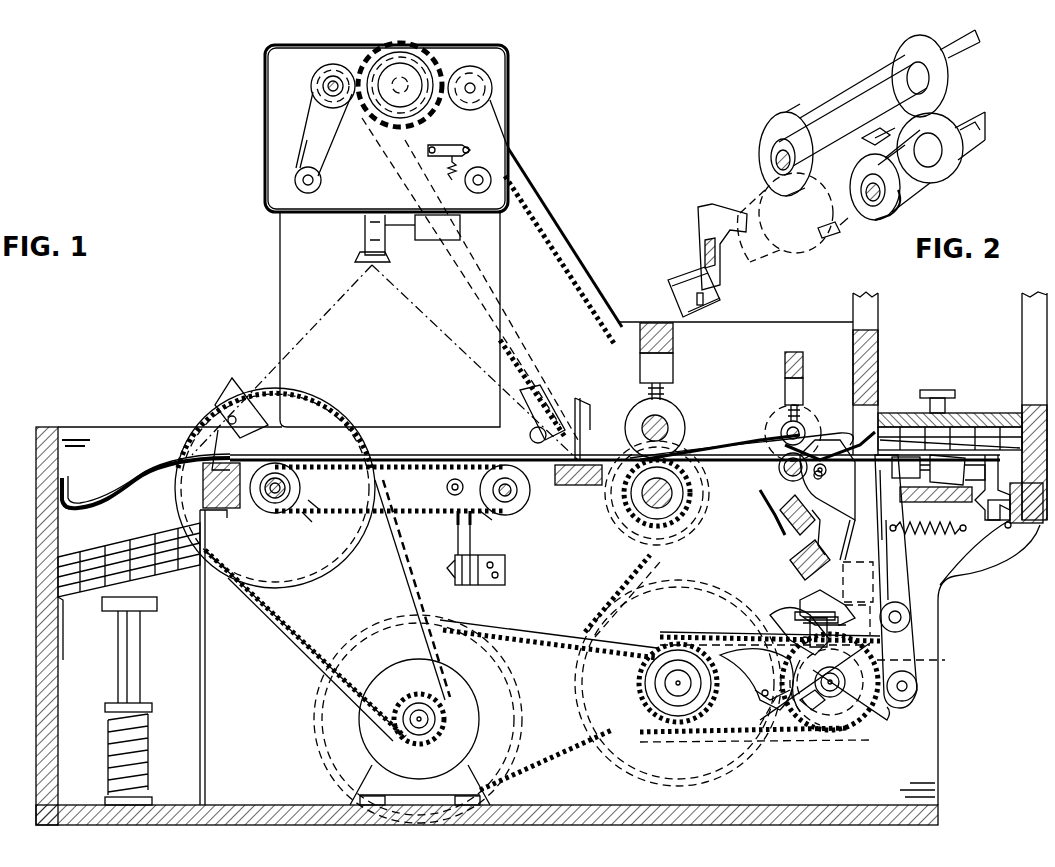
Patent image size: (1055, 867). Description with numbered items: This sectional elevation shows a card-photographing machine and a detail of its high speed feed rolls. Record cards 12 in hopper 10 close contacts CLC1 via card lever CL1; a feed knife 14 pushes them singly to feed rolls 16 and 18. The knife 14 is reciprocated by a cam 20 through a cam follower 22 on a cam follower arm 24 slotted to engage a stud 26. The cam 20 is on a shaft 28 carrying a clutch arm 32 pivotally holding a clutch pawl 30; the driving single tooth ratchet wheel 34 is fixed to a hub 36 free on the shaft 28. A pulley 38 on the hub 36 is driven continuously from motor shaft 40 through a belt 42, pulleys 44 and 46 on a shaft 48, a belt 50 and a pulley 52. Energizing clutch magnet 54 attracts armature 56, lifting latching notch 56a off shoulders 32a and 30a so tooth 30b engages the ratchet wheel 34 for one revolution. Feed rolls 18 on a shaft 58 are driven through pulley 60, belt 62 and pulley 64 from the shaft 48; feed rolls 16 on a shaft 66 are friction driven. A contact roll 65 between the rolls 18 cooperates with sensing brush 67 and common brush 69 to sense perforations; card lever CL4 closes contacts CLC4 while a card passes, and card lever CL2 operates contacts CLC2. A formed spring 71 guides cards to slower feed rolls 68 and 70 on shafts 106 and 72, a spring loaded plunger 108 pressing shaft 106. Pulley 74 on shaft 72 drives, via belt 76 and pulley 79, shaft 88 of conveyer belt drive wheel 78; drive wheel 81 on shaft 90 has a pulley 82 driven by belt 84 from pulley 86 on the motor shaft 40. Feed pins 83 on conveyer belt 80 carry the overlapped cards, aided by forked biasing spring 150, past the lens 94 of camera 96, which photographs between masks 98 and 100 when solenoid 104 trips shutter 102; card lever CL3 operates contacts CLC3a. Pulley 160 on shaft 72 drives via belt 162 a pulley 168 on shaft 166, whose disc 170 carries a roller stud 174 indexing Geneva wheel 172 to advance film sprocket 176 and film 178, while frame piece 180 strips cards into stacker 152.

In FIG. 1, the card feed hopper 10 is at (955, 372).
In FIG. 1, the record cards 12 is at (955, 415).
In FIG. 1, the feed knife 14 is at (945, 490).
In FIG. 1, the feed rolls 16 is at (782, 433).
In FIG. 2, the feed rolls 16 is at (785, 118).
In FIG. 2, the feed rolls 18 is at (952, 160).
In FIG. 1, the cam 20 is at (880, 712).
In FIG. 1, the cam follower 22 is at (918, 690).
In FIG. 1, the cam follower arm 24 is at (905, 548).
In FIG. 1, the stud 26 is at (931, 510).
In FIG. 1, the shaft 28 is at (832, 702).
In FIG. 1, the clutch pawl 30 is at (725, 650).
In FIG. 1, the shoulder 30a is at (785, 618).
In FIG. 1, the tooth 30b is at (761, 697).
In FIG. 1, the clutch arm 32 is at (845, 632).
In FIG. 1, the shoulder 32a is at (854, 620).
In FIG. 1, the single tooth ratchet wheel 34 is at (820, 730).
In FIG. 1, the hub 36 is at (815, 705).
In FIG. 1, the pulley 38 is at (919, 660).
In FIG. 1, the motor shaft 40 is at (432, 718).
In FIG. 1, the belt 42 is at (740, 740).
In FIG. 1, the pulley 44 is at (705, 635).
In FIG. 1, the pulley 46 is at (665, 688).
In FIG. 1, the shaft 48 is at (400, 742).
In FIG. 1, the belt 50 is at (600, 748).
In FIG. 1, the pulley 52 is at (518, 715).
In FIG. 1, the clutch magnet 54 is at (775, 690).
In FIG. 1, the armature 56 is at (800, 605).
In FIG. 1, the latching notch 56a is at (855, 600).
In FIG. 1, the shaft 58 is at (780, 478).
In FIG. 2, the shaft 58 is at (975, 128).
In FIG. 1, the pulley 60 is at (760, 478).
In FIG. 1, the belt 62 is at (645, 575).
In FIG. 1, the pulley 64 is at (700, 595).
In FIG. 1, the contact roll 65 is at (822, 464).
In FIG. 2, the contact roll 65 is at (888, 210).
In FIG. 1, the shaft 66 is at (780, 440).
In FIG. 2, the shaft 66 is at (860, 100).
In FIG. 1, the sensing brush 67 is at (800, 395).
In FIG. 2, the sensing brush 67 is at (890, 178).
In FIG. 1, the feed rolls 68 is at (680, 412).
In FIG. 1, the common brush 69 is at (795, 535).
In FIG. 2, the common brush 69 is at (838, 228).
In FIG. 1, the feed rolls 70 is at (710, 440).
In FIG. 1, the formed spring 71 is at (745, 440).
In FIG. 1, the shaft 72 is at (670, 500).
In FIG. 1, the pulley 74 is at (625, 460).
In FIG. 1, the belt 76 is at (605, 520).
In FIG. 1, the conveyer belt drive wheel 78 is at (468, 524).
In FIG. 1, the pulley 79 is at (493, 524).
In FIG. 1, the conveyer belt 80 is at (370, 472).
In FIG. 1, the conveyer belt drive wheel 81 is at (292, 487).
In FIG. 1, the pulley 82 is at (316, 575).
In FIG. 1, the feed pins 83 is at (330, 520).
In FIG. 1, the belt 84 is at (300, 648).
In FIG. 1, the pulley 86 is at (418, 700).
In FIG. 1, the shaft 88 is at (515, 505).
In FIG. 1, the shaft 90 is at (283, 505).
In FIG. 1, the lens 94 is at (368, 265).
In FIG. 1, the camera 96 is at (362, 186).
In FIG. 1, the mask 98 is at (530, 390).
In FIG. 1, the mask 100 is at (235, 380).
In FIG. 1, the camera shutter 102 is at (365, 236).
In FIG. 1, the solenoid 104 is at (460, 226).
In FIG. 1, the shaft 106 is at (645, 420).
In FIG. 1, the spring loaded plunger 108 is at (665, 400).
In FIG. 1, the forked biasing spring 150 is at (578, 484).
In FIG. 1, the stacker 152 is at (130, 524).
In FIG. 1, the pulley 160 is at (635, 455).
In FIG. 1, the belt 162 is at (575, 248).
In FIG. 1, the shaft 166 is at (400, 85).
In FIG. 1, the pulley 168 is at (425, 150).
In FIG. 1, the disc 170 is at (440, 45).
In FIG. 1, the Geneva wheel 172 is at (311, 88).
In FIG. 1, the roller stud 174 is at (398, 81).
In FIG. 1, the film sprocket 176 is at (313, 108).
In FIG. 1, the film 178 is at (307, 140).
In FIG. 1, the frame piece 180 is at (235, 507).
In FIG. 1, the card lever CL1 is at (975, 520).
In FIG. 1, the card lever CL2 is at (838, 483).
In FIG. 1, the card lever CL3 is at (446, 486).
In FIG. 2, the card lever CL4 is at (705, 228).
In FIG. 1, the card lever contacts CLC1 is at (1015, 505).
In FIG. 1, the card lever contacts CLC2 is at (840, 535).
In FIG. 1, the card lever contacts CLC3a is at (478, 545).
In FIG. 2, the contacts CLC4 is at (672, 295).